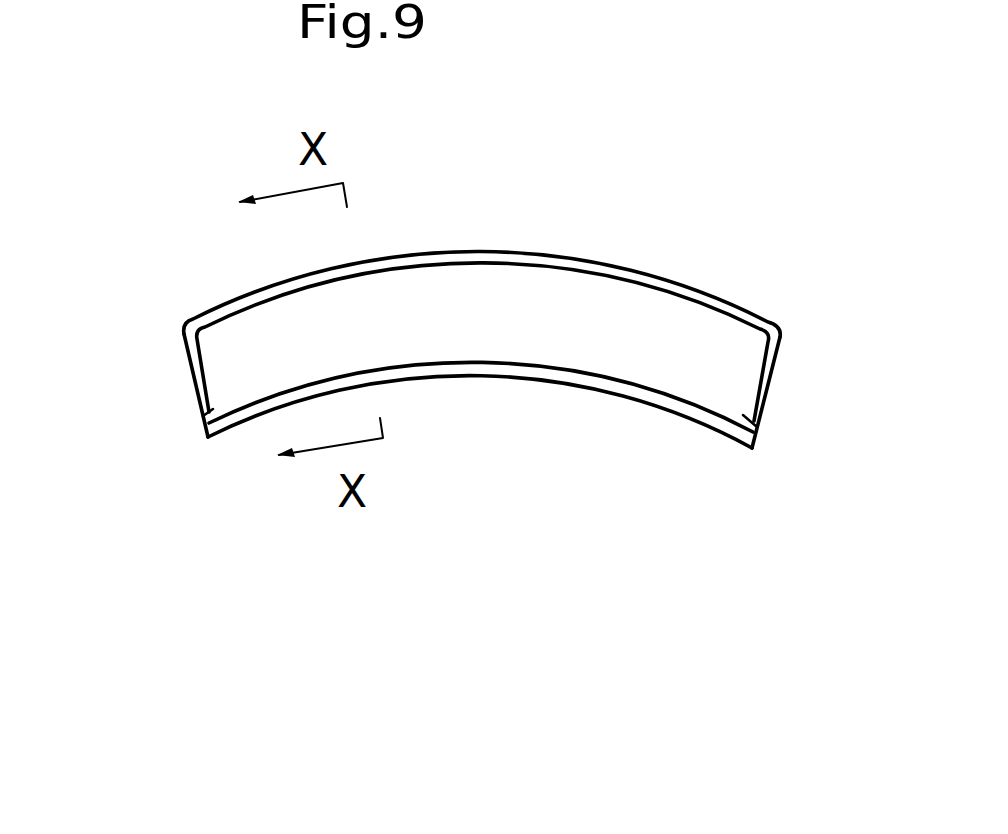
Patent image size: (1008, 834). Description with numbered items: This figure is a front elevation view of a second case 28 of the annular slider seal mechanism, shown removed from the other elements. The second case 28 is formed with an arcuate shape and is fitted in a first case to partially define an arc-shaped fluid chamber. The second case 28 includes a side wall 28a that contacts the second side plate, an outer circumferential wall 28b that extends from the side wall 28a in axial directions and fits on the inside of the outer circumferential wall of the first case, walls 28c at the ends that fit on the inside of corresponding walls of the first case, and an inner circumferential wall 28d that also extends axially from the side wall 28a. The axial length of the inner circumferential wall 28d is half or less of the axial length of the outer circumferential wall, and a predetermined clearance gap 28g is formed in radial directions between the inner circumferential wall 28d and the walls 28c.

The second case 28 is at (706, 209).
The side wall 28a is at (528, 315).
The outer circumferential wall 28b is at (432, 256).
The walls 28c is at (198, 365).
The inner circumferential wall 28d is at (512, 364).
The clearance gap 28g is at (207, 418).